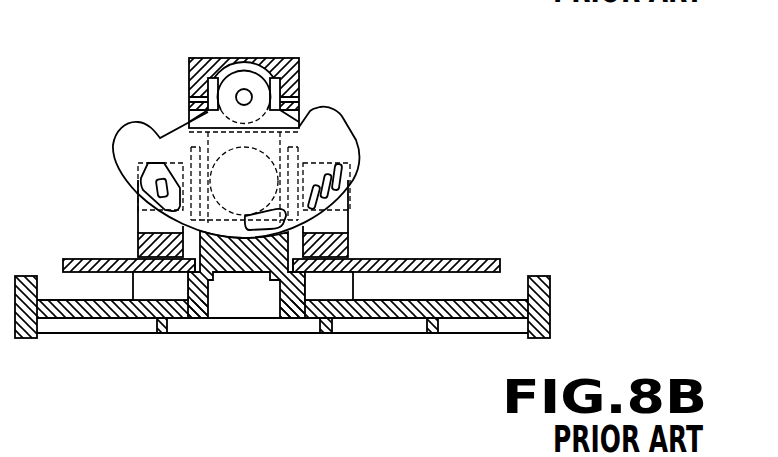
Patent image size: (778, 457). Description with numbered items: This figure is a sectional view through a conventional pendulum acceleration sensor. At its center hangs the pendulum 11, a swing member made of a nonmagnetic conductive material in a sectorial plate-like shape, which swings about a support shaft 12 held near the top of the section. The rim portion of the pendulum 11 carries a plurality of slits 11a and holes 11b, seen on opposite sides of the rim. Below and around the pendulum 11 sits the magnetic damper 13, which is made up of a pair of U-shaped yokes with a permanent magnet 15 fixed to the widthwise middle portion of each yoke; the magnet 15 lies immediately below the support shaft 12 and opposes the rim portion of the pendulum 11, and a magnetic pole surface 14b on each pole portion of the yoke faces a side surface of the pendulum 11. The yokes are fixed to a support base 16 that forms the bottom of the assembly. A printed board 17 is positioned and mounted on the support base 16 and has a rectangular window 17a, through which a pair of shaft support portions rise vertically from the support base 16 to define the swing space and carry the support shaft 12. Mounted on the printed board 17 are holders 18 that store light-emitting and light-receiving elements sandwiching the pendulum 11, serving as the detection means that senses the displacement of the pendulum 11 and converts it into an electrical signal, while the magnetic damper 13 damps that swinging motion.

The pendulum 11 is at (330, 111).
The slits 11a is at (350, 175).
The holes 11b is at (138, 177).
The support shaft 12 is at (250, 88).
The magnetic damper 13 is at (181, 137).
The magnetic pole surface 14b is at (300, 158).
The permanent magnet 15 is at (229, 212).
The support base 16 is at (548, 312).
The printed board 17 is at (480, 259).
The window 17a is at (309, 274).
The holders 18 is at (138, 214).